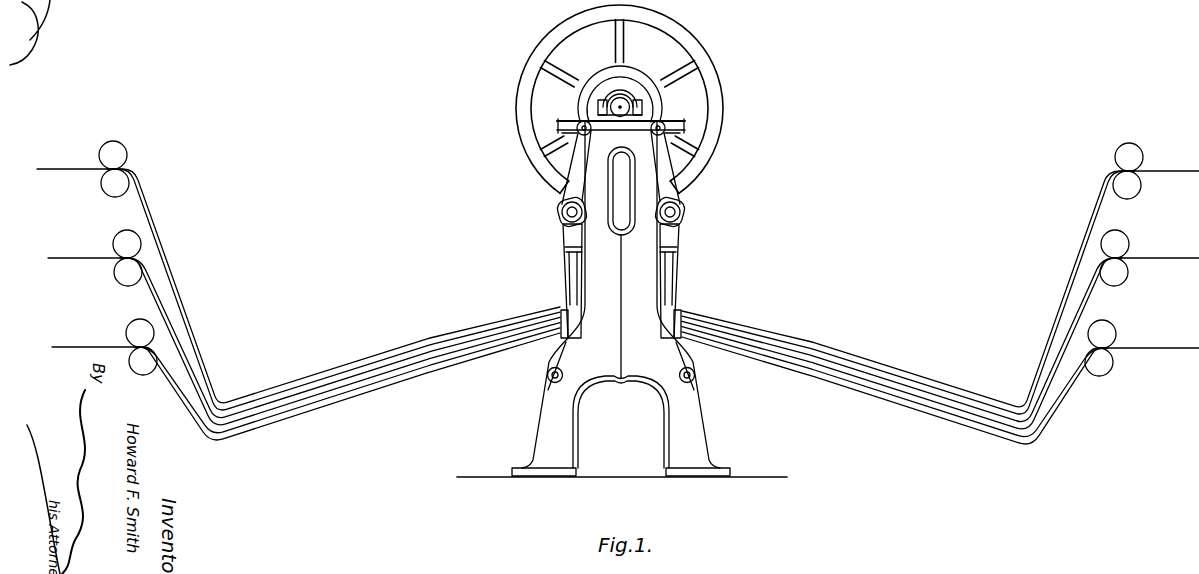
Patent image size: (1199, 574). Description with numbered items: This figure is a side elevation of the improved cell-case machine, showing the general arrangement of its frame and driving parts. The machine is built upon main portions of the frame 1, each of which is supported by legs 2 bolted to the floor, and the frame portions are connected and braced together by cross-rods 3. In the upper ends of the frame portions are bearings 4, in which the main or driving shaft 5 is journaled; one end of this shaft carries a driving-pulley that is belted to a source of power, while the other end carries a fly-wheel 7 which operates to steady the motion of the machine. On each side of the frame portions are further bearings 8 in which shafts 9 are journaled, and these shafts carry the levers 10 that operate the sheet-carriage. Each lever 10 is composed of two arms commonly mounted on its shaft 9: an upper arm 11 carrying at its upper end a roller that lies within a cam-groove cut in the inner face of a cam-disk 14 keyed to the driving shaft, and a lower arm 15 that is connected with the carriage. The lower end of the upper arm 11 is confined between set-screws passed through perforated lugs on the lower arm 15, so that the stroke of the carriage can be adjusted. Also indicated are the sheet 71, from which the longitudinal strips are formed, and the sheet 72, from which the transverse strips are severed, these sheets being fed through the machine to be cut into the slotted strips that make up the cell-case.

The main portion of the frame 1 is at (621, 295).
The leg 2 is at (621, 409).
The cross-rod 3 is at (680, 127).
The bearing 4 is at (628, 99).
The main or driving shaft 5 is at (612, 100).
The fly-wheel 7 is at (531, 76).
The bearing 8 is at (561, 212).
The shaft 9 is at (561, 228).
The lever 10 is at (624, 281).
The upper arm 11 is at (628, 162).
The cam-disk 14 is at (600, 75).
The lower arm 15 is at (568, 285).
The sheet 71 is at (298, 290).
The sheet 72 is at (940, 293).